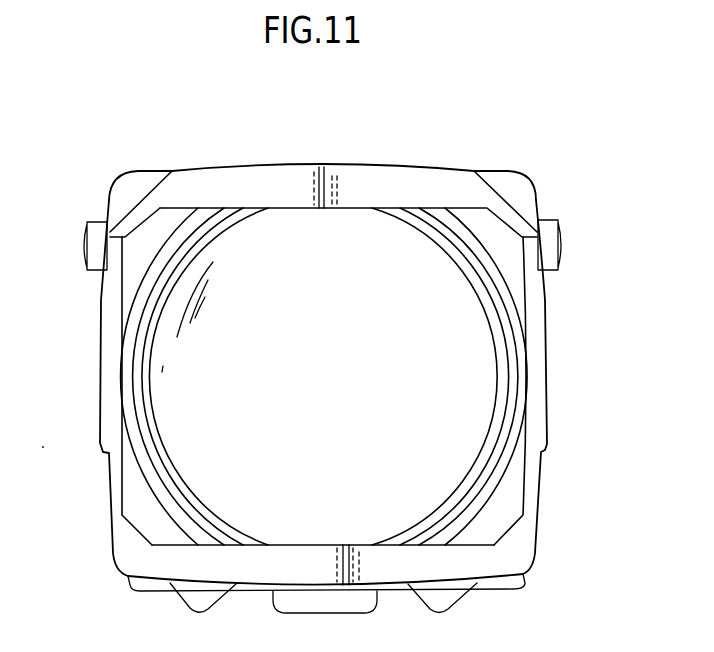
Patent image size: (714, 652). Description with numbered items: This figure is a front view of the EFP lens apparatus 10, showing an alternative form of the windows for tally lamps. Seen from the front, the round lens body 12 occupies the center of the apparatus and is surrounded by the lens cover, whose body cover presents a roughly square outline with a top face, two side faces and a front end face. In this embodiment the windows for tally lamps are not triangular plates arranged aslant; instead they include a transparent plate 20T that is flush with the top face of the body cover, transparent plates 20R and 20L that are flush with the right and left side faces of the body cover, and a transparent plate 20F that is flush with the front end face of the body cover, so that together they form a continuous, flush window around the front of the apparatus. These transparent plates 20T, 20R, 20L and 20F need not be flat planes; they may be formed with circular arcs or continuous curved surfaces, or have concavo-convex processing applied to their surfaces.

The EFP lens apparatus 10 is at (345, 329).
The lens body 12 is at (493, 510).
The transparent plate 20T is at (160, 170).
The transparent plate 20F is at (143, 186).
The transparent plate 20L is at (108, 203).
The transparent plate 20R is at (548, 207).